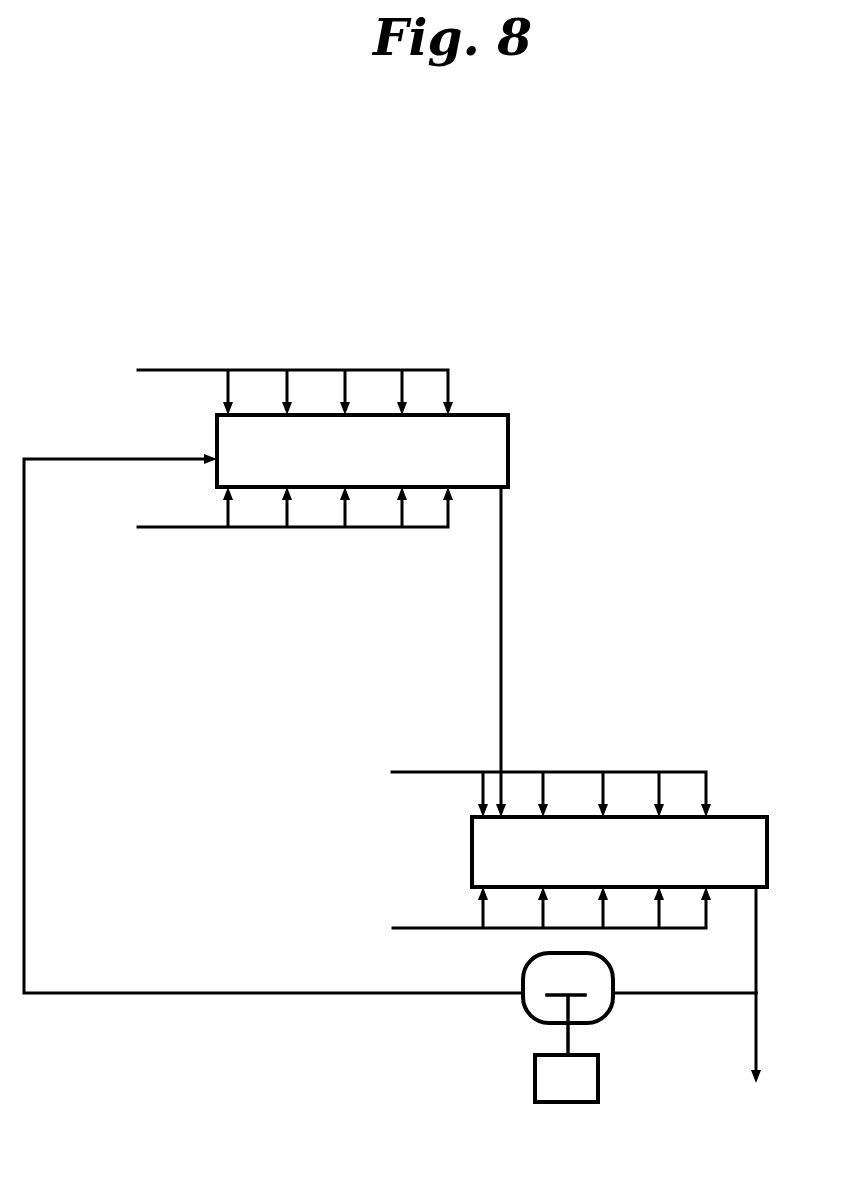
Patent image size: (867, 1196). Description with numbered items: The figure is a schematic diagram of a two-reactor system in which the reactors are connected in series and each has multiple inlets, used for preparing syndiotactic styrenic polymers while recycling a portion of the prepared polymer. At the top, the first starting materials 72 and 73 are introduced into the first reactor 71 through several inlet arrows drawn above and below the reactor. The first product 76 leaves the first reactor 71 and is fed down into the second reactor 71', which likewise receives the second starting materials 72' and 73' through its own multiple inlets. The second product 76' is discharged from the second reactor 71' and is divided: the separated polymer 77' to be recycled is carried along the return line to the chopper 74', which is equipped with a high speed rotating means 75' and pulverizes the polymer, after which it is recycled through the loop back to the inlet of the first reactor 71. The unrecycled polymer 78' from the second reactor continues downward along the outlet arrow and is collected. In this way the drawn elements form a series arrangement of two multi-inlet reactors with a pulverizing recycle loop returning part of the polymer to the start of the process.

The first reactor 71 is at (394, 427).
The first starting material 72 is at (273, 517).
The first starting material 73 is at (277, 385).
The first product 76 is at (536, 652).
The second reactor 71' is at (659, 819).
The second starting material 72' is at (528, 919).
The second starting material 73' is at (525, 788).
The second product 76' is at (802, 940).
The separated polymer to be recycled 77' is at (390, 723).
The unrecycled polymer 78' is at (705, 1046).
The chopper 74' is at (519, 1026).
The high speed rotating means 75' is at (527, 1107).